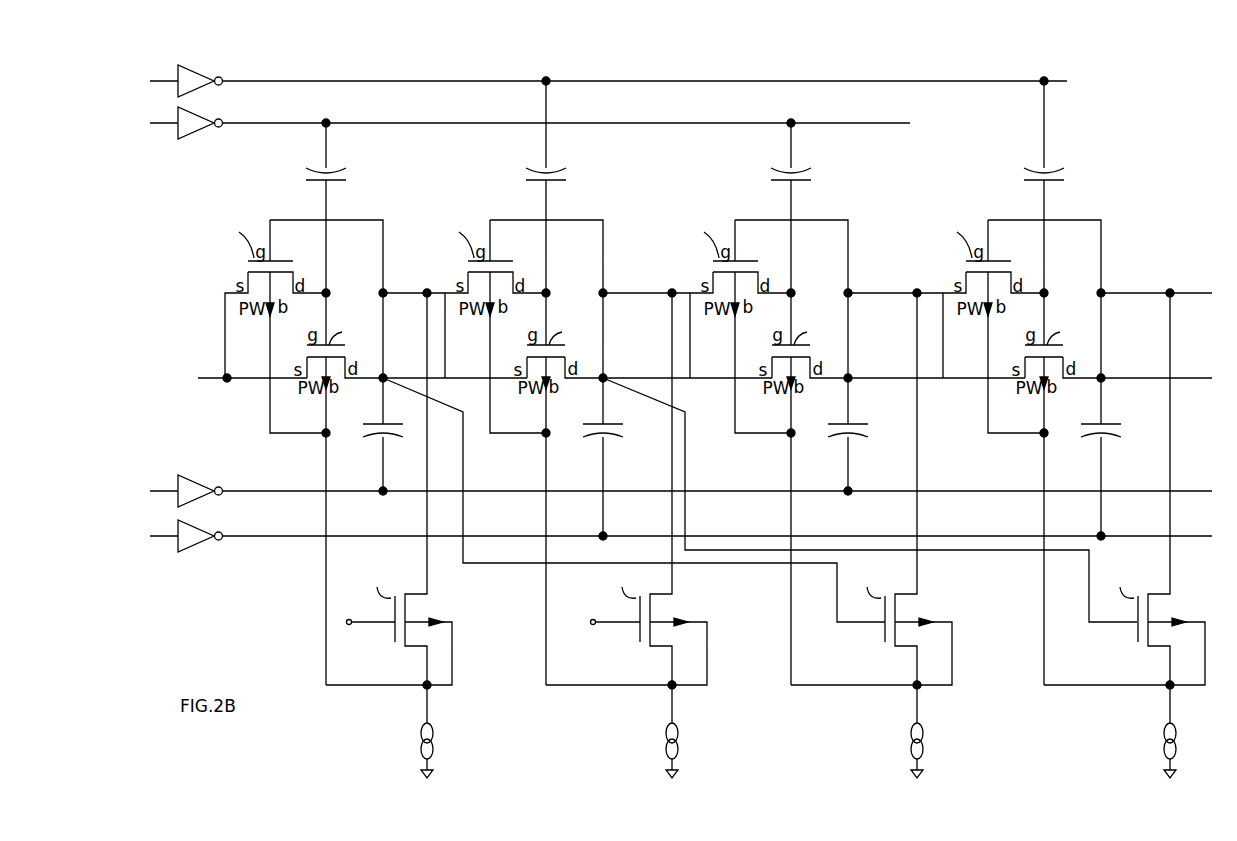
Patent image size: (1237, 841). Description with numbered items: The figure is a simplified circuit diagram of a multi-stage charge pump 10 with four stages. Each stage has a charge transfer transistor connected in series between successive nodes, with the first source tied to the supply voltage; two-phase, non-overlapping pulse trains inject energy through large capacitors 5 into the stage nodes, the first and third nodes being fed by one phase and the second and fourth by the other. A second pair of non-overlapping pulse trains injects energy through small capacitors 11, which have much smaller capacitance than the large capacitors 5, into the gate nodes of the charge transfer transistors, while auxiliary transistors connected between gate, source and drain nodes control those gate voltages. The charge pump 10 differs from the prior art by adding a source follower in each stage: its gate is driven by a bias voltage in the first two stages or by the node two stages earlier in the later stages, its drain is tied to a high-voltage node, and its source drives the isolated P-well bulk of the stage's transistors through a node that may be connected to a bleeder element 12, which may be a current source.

The multi-stage charge pump 10 is at (690, 419).
The small capacitor 11 is at (324, 173).
The large capacitor 5 is at (392, 437).
The bleeder element 12 is at (434, 753).